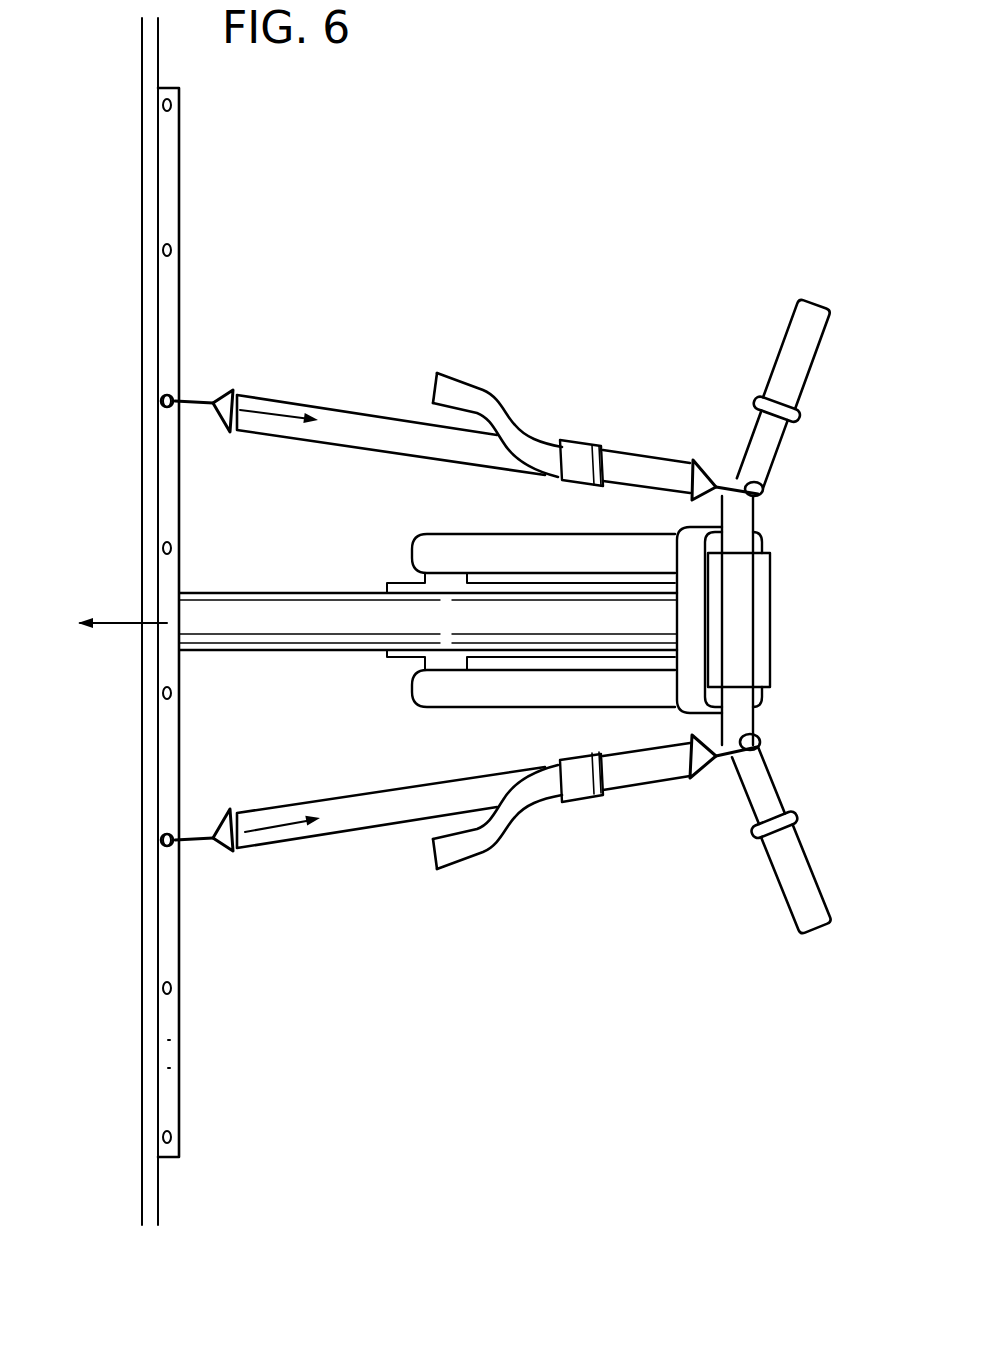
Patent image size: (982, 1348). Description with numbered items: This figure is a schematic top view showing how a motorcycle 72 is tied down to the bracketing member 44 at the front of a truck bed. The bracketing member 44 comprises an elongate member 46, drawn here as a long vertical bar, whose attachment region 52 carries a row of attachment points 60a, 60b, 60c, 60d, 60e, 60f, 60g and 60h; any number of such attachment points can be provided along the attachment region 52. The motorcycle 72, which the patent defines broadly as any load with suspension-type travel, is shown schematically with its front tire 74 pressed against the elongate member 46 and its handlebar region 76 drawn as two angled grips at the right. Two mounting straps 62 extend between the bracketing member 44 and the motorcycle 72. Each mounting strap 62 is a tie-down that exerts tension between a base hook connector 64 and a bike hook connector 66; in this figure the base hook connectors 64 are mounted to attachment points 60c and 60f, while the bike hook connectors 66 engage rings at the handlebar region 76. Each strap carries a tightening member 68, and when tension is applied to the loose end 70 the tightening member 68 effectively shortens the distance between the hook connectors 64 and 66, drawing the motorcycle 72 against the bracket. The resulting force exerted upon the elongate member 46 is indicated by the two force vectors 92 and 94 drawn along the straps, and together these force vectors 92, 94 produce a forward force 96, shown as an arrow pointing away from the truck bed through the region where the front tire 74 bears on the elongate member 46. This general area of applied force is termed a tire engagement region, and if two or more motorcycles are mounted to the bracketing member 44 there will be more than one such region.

The bracketing member 44 is at (197, 900).
The elongate member 46 is at (168, 1040).
The attachment region 52 is at (168, 1068).
The attachment point 60a is at (178, 1135).
The attachment point 60b is at (178, 988).
The attachment point 60c is at (165, 838).
The attachment point 60d is at (178, 693).
The attachment point 60e is at (178, 548).
The attachment point 60f is at (165, 398).
The attachment point 60g is at (178, 250).
The attachment point 60h is at (178, 103).
The mounting strap 62 is at (370, 423).
The base hook connector 64 is at (203, 393).
The bike hook connector 66 is at (750, 480).
The tightening member 68 is at (580, 453).
The loose end 70 is at (463, 393).
The motorcycle 72 is at (455, 530).
The front tire 74 is at (283, 610).
The handlebar region 76 is at (762, 440).
The force vector 92 is at (276, 420).
The force vector 94 is at (290, 856).
The forward force 96 is at (118, 622).